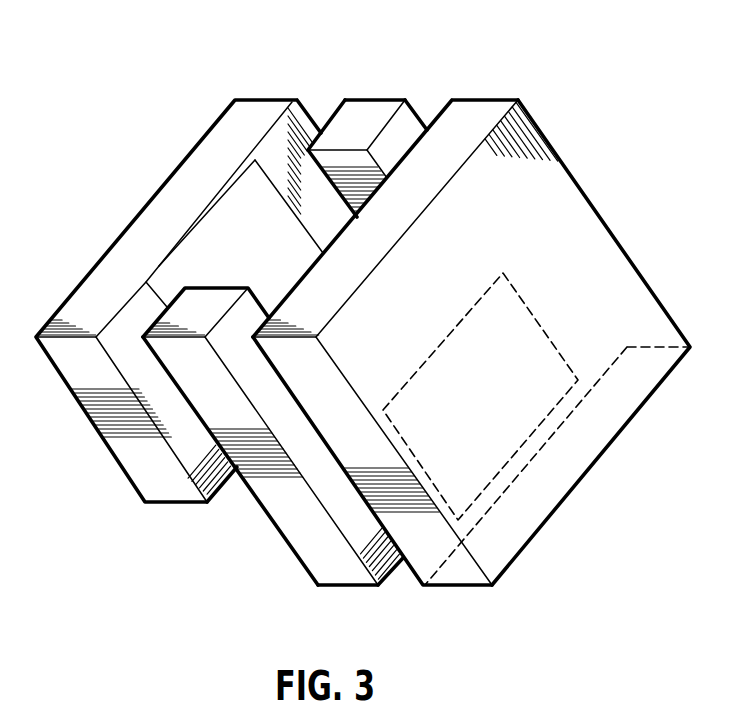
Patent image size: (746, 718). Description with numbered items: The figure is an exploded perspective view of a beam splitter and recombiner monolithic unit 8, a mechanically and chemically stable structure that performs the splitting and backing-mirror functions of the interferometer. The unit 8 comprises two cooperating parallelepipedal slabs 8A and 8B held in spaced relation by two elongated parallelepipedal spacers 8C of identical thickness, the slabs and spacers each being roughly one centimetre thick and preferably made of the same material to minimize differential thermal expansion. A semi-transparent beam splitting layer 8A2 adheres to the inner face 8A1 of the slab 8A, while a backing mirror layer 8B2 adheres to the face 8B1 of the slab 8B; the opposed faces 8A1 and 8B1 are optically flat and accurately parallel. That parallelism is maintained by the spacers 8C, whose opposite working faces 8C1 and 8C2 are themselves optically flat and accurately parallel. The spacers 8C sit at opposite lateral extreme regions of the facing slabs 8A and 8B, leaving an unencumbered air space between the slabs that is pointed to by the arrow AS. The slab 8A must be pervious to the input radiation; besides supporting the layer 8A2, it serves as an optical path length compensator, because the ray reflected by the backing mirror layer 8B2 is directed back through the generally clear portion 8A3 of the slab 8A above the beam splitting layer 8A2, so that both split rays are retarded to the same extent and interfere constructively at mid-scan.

The beam splitter and recombiner monolithic unit 8 is at (135, 140).
The parallelepipedal slab 8A is at (508, 87).
The inner face of slab 8A 8A1 is at (444, 100).
The semi-transparent beam splitting layer 8A2 is at (425, 408).
The clear portion of slab 8A 8A3 is at (455, 281).
The parallelepipedal slab 8B is at (232, 95).
The face of slab 8B 8B1 is at (128, 360).
The backing mirror layer 8B2 is at (160, 264).
The elongated parallelepipedal spacers 8C is at (373, 86).
The working face of spacer 8C1 is at (408, 117).
The working face of spacer 8C2 is at (336, 109).
The air space AS is at (272, 242).